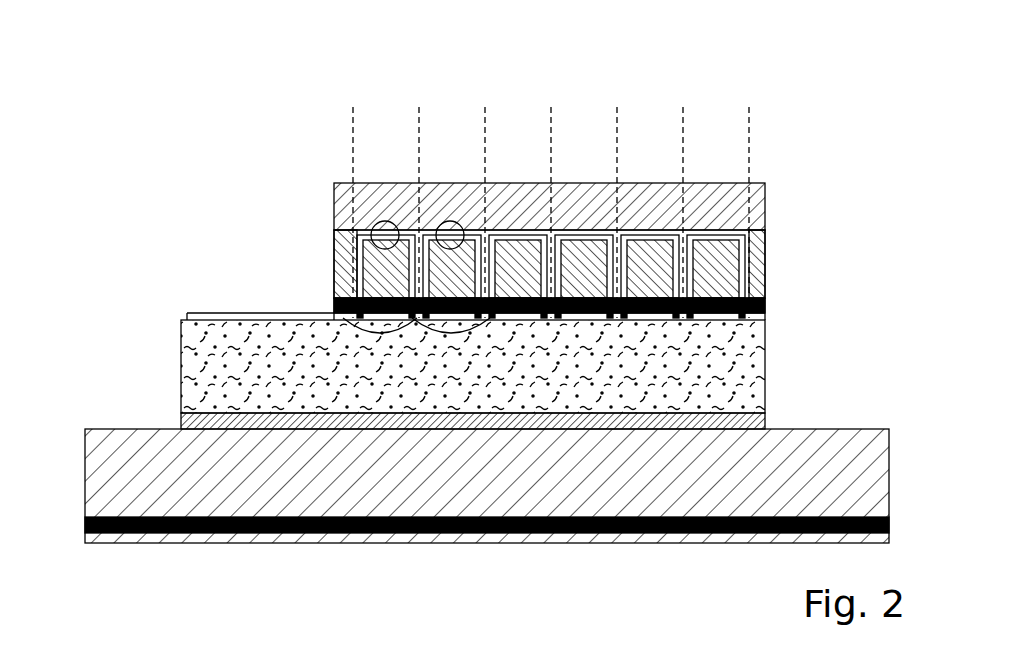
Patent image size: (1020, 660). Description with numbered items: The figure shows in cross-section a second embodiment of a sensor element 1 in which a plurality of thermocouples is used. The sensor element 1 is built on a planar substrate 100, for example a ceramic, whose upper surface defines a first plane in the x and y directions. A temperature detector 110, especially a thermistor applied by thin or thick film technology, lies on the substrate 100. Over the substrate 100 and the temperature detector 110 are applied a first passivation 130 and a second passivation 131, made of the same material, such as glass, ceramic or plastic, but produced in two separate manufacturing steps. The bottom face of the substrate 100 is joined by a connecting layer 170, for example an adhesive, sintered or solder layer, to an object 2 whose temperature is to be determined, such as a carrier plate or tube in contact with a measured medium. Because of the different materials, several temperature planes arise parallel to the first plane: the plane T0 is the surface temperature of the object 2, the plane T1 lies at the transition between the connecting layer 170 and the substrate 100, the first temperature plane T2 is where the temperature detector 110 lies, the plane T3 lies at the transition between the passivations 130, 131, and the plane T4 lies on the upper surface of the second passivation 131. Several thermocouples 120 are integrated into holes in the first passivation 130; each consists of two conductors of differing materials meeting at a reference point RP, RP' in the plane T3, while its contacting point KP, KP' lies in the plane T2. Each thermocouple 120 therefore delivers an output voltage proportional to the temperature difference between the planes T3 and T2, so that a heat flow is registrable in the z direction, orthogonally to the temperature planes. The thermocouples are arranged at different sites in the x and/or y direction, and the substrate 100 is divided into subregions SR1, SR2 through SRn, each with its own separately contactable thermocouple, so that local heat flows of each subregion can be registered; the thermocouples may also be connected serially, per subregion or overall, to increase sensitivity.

The sensor element 1 is at (85, 267).
The object 2 is at (662, 517).
The substrate 100 is at (750, 372).
The temperature detector 110 is at (765, 305).
The thermocouple 120 is at (447, 258).
The first passivation 130 is at (541, 266).
The second passivation 131 is at (763, 212).
The connecting layer 170 is at (763, 420).
The first subregion SR1 is at (419, 100).
The second subregion SR2 is at (485, 100).
The n-th subregion SRn is at (749, 100).
The reference point RP is at (391, 183).
The reference point of further thermocouple RP' is at (451, 183).
The contacting point KP is at (376, 460).
The contacting point of further thermocouple KP' is at (451, 460).
The temperature plane T0 is at (75, 429).
The temperature plane T1 is at (155, 411).
The first temperature plane T2 is at (155, 315).
The temperature plane T3 is at (323, 230).
The temperature plane T4 is at (323, 183).
The z direction z is at (901, 207).